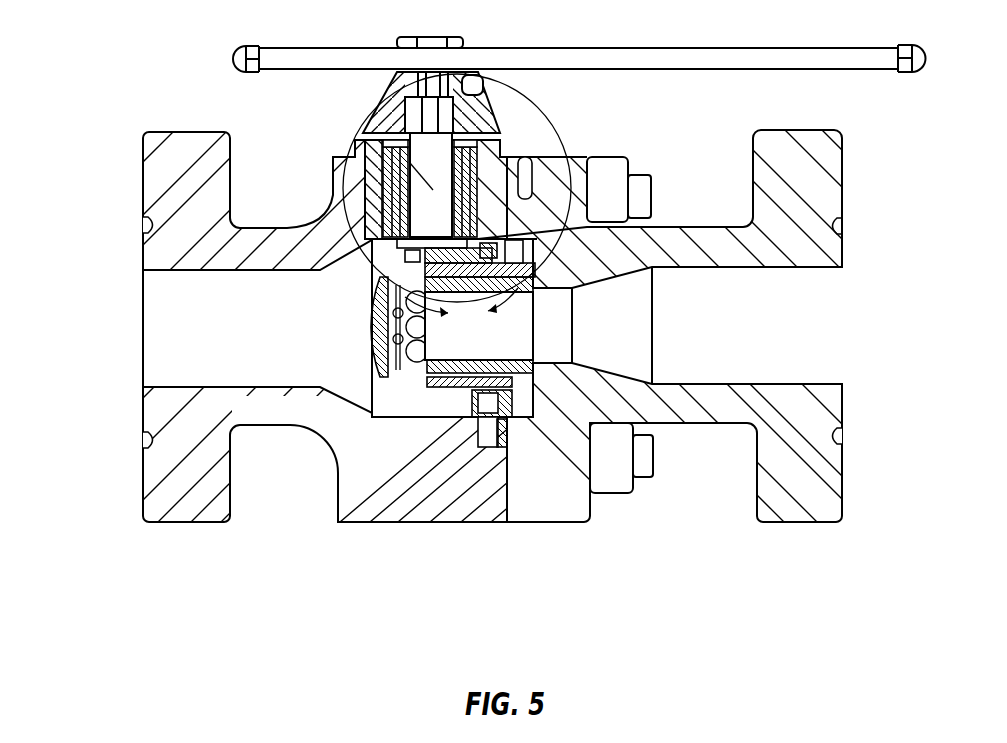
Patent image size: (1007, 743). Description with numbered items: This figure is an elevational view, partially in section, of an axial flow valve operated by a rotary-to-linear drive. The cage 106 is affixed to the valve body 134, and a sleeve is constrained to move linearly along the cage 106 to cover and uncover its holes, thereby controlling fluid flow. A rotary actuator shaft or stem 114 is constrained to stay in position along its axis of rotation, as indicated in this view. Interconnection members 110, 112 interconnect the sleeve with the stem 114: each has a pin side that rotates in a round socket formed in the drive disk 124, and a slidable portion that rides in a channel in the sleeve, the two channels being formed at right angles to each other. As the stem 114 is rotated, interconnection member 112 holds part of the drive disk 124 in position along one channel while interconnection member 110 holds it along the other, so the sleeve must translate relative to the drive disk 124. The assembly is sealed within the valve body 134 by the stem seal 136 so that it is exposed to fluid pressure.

The valve body 134 is at (160, 490).
The stem 114 is at (360, 130).
The stem seal 136 is at (505, 146).
The interconnection member 112 is at (555, 158).
The drive disk 124 is at (398, 258).
The interconnection member 110 is at (372, 293).
The cage 106 is at (370, 341).